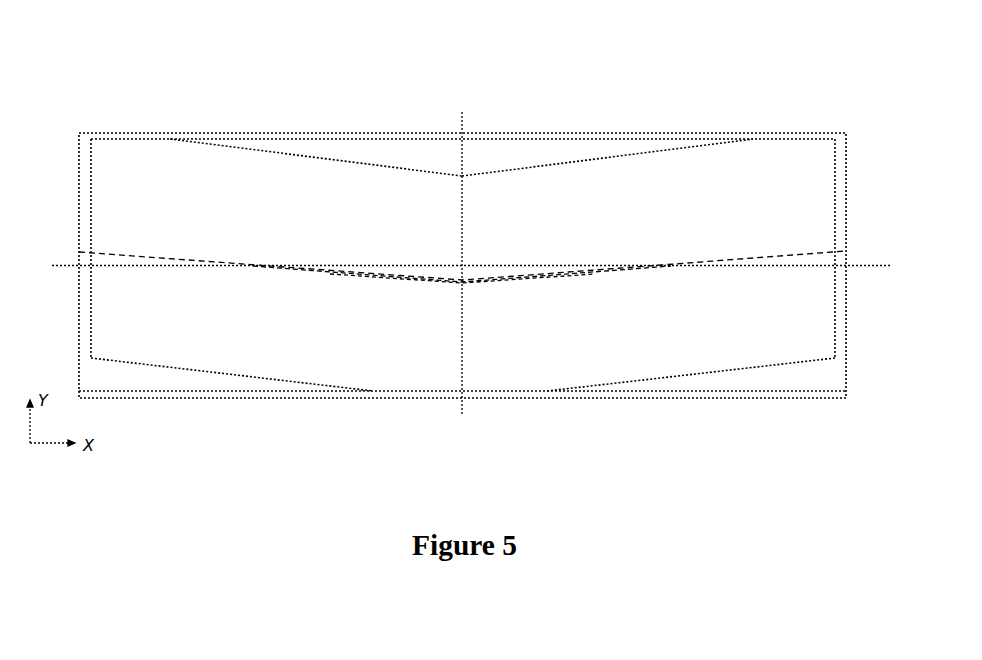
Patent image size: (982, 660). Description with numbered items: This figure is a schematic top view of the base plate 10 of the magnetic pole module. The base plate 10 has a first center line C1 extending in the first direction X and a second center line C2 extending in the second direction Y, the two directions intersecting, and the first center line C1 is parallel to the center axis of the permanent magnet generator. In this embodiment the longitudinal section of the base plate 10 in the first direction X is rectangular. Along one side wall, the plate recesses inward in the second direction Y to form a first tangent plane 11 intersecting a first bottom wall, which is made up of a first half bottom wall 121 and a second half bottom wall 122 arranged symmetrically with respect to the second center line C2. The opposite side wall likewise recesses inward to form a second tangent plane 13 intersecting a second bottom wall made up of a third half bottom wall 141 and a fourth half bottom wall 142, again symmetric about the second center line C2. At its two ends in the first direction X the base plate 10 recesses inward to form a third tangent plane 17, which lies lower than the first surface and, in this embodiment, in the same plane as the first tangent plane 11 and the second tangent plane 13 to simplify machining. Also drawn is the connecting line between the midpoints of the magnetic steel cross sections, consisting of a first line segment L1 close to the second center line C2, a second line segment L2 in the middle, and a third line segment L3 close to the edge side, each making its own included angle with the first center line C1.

The base plate 10 is at (457, 76).
The first tangent plane 11 is at (404, 148).
The first half bottom wall 121 is at (300, 158).
The second half bottom wall 122 is at (618, 152).
The second tangent plane 13 is at (200, 386).
The third half bottom wall 141 is at (290, 382).
The fourth half bottom wall 142 is at (620, 386).
The third tangent plane 17 is at (87, 236).
The first center line C1 is at (471, 277).
The second center line C2 is at (479, 263).
The first line segment L1 is at (400, 283).
The second line segment L2 is at (237, 263).
The third line segment L3 is at (120, 252).